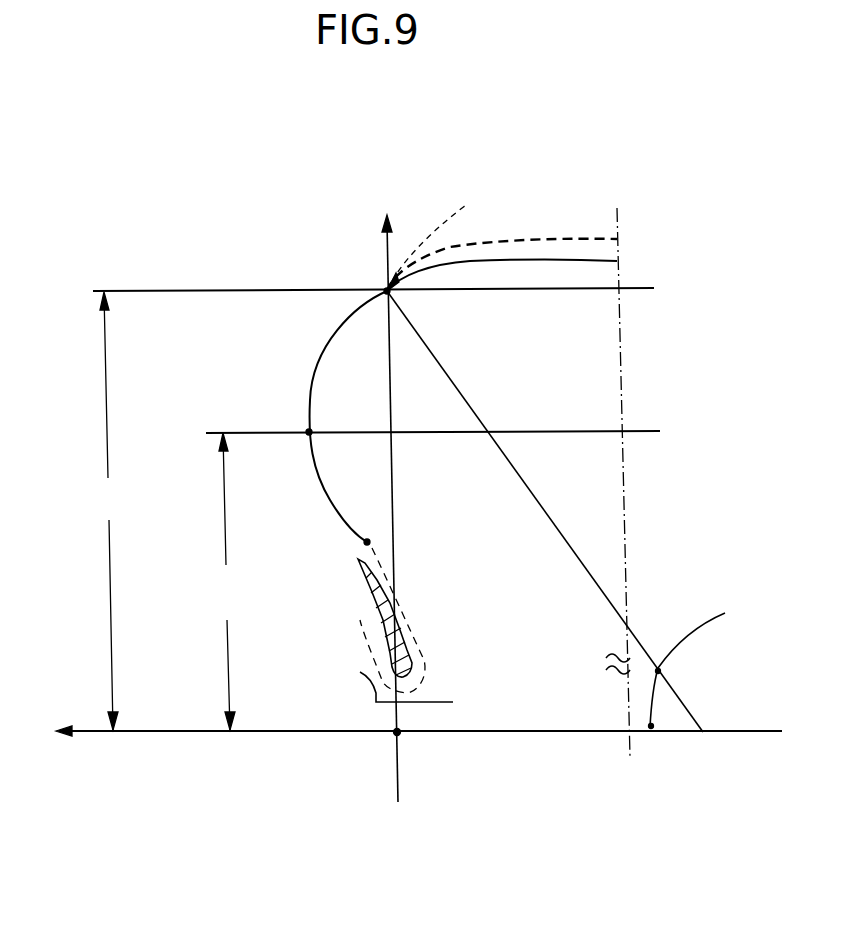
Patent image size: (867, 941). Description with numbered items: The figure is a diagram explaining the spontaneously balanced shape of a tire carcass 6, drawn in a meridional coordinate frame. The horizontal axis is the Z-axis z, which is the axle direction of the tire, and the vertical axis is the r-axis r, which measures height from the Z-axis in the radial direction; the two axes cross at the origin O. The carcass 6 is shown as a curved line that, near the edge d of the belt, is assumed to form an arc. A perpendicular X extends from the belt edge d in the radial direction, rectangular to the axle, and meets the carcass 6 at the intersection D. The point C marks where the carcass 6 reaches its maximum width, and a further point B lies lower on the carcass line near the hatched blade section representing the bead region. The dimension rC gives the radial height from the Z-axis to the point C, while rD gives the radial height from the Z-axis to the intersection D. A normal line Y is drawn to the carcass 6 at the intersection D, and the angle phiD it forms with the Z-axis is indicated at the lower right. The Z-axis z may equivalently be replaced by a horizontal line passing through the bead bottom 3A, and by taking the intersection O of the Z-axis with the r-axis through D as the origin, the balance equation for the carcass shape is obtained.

The carcass 6 is at (323, 482).
The bead bottom 3A is at (397, 706).
The intersection D is at (389, 293).
The point of maximum width C is at (322, 417).
The point B is at (365, 542).
The perpendicular X is at (387, 348).
The normal line Y is at (463, 396).
The origin O is at (400, 737).
The edge of the belt d is at (432, 236).
The r-axis r is at (388, 491).
The Z-axis z is at (407, 732).
The radial height to intersection D rD is at (373, 509).
The radial height to point C rC is at (433, 581).
The angle ΦD phiD is at (707, 665).
The impeller blade section blade is at (391, 620).